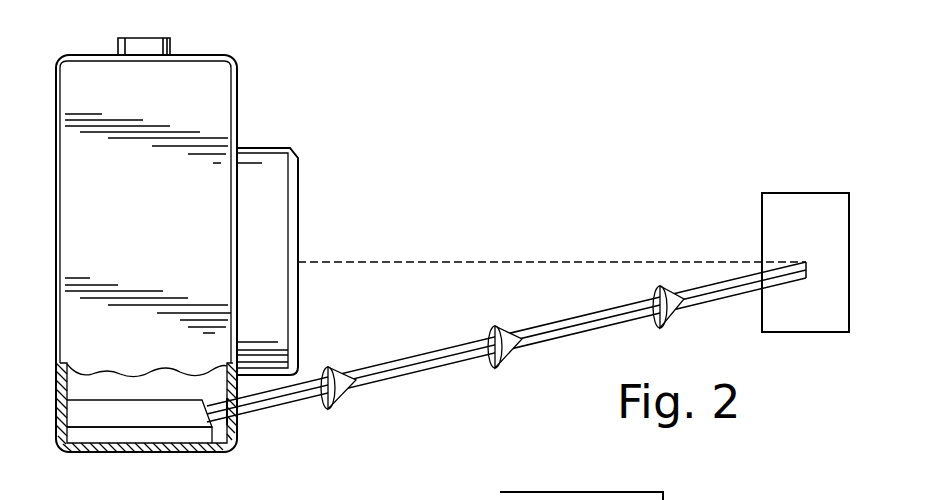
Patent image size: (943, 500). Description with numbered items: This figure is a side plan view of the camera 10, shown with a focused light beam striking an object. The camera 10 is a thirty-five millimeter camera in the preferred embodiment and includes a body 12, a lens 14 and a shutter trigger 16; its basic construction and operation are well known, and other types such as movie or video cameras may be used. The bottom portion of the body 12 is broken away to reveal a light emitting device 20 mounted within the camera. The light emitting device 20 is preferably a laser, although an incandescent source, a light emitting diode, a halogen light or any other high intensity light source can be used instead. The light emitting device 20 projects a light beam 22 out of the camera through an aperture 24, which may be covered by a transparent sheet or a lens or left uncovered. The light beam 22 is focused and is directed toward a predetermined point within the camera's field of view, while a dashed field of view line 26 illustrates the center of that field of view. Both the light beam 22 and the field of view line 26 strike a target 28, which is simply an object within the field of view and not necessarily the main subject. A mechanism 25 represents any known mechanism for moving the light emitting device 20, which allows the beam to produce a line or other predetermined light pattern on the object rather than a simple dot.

The camera 10 is at (268, 100).
The body 12 is at (70, 92).
The lens 14 is at (298, 226).
The shutter trigger 16 is at (140, 36).
The light emitting device 20 is at (113, 413).
The light beam 22 is at (387, 384).
The aperture 24 is at (238, 426).
The mechanism 25 is at (155, 433).
The field of view line 26 is at (542, 262).
The target 28 is at (782, 200).